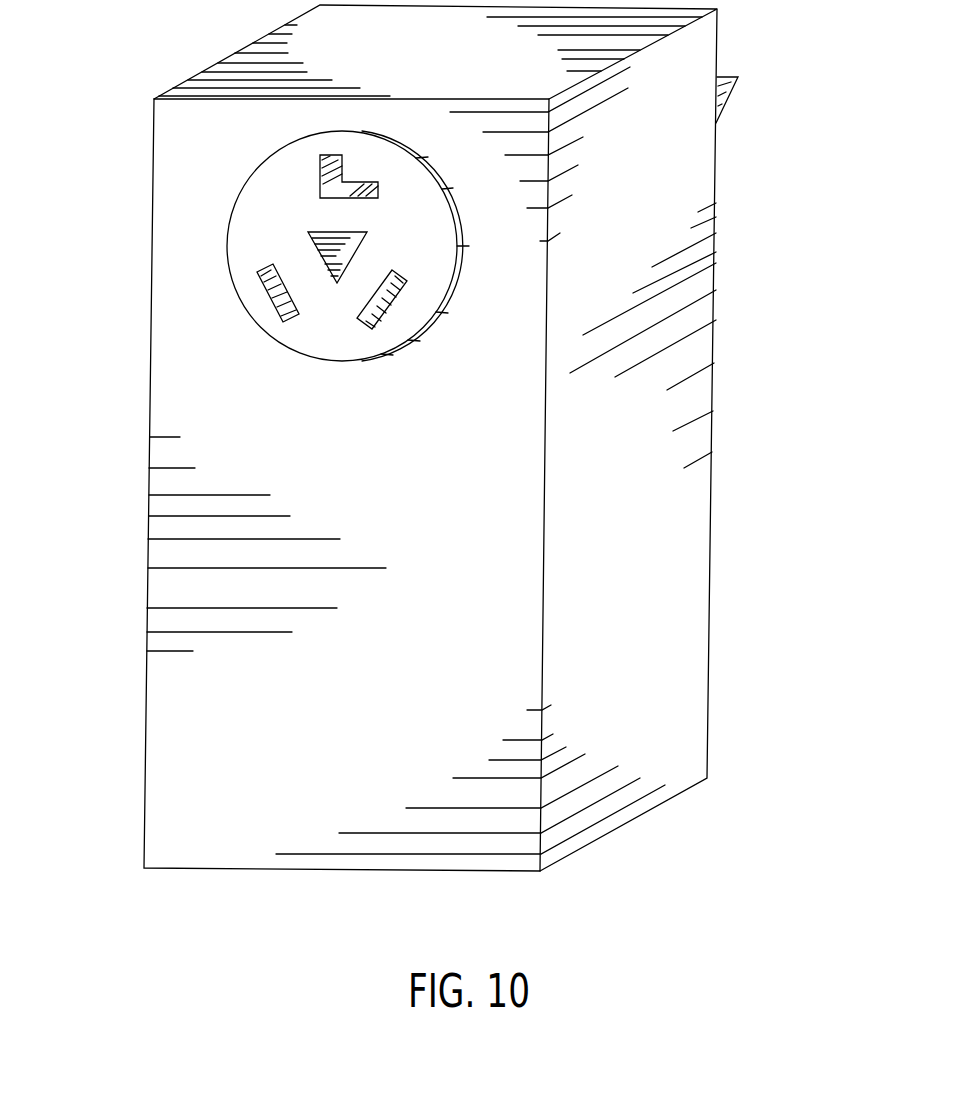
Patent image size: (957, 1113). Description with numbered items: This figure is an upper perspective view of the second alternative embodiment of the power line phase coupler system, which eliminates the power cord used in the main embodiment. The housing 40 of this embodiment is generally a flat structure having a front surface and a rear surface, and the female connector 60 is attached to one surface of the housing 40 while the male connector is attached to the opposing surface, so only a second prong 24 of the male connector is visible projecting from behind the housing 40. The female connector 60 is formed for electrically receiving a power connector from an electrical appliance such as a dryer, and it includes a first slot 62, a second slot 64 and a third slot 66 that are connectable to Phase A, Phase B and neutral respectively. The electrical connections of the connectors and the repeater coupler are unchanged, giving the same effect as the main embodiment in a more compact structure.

The housing 40 is at (712, 512).
The second prong 24 is at (723, 90).
The female connector 60 is at (295, 150).
The first slot 62 is at (387, 292).
The second slot 64 is at (290, 316).
The third slot 66 is at (328, 183).